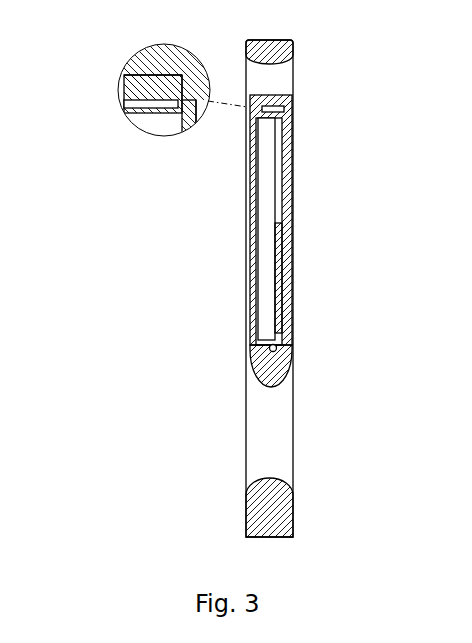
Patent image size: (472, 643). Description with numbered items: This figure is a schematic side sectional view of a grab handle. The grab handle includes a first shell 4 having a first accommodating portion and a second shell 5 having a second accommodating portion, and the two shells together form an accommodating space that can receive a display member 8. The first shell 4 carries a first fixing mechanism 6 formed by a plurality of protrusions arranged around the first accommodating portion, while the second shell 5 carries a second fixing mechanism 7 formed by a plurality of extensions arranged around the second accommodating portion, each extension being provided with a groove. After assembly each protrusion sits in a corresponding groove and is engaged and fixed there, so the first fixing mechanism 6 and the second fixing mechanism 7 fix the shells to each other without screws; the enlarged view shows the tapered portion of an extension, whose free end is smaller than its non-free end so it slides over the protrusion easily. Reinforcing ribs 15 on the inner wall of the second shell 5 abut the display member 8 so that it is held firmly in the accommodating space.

The first shell 4 is at (249, 349).
The second shell 5 is at (290, 139).
The first fixing mechanism 6 is at (158, 75).
The second fixing mechanism 7 is at (148, 103).
The display member 8 is at (272, 204).
The reinforcing ribs 15 is at (282, 294).